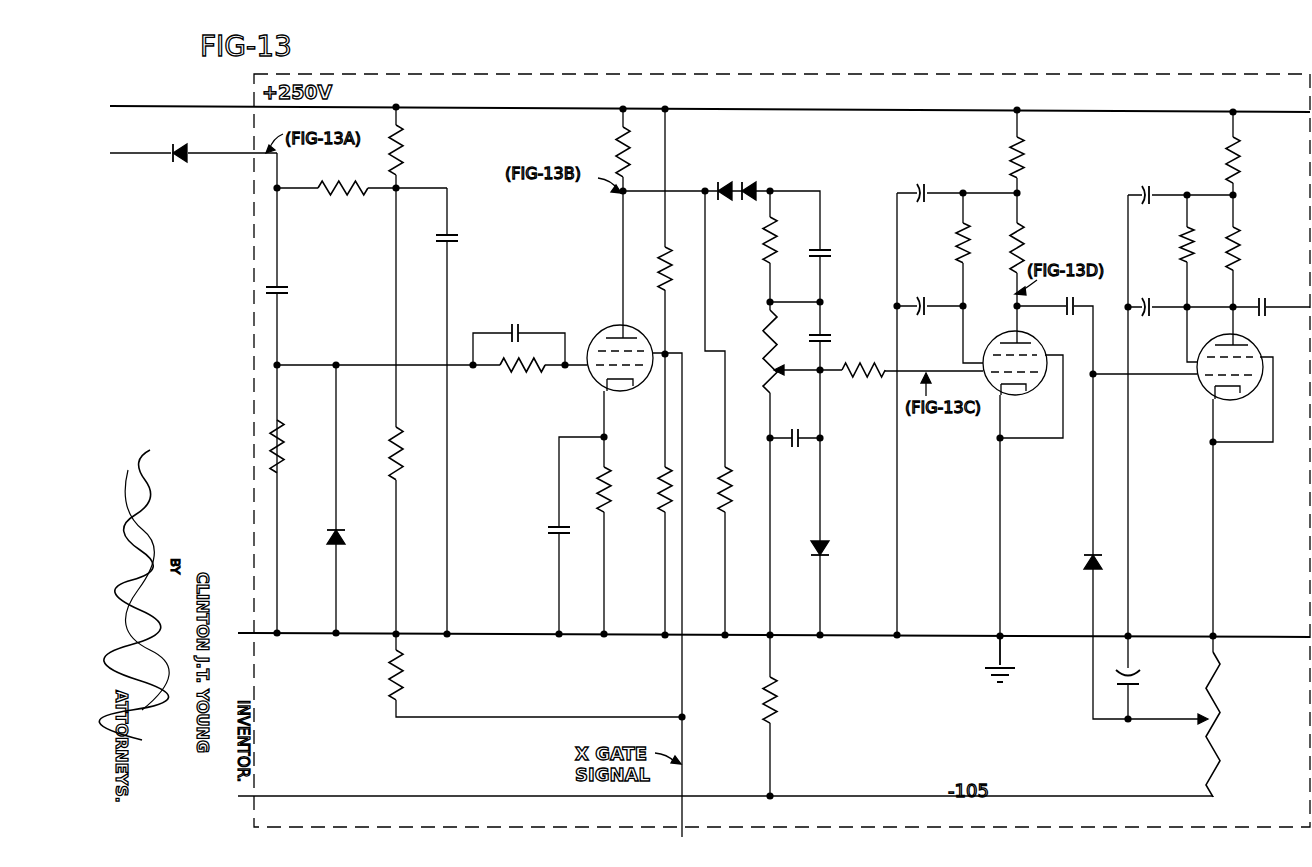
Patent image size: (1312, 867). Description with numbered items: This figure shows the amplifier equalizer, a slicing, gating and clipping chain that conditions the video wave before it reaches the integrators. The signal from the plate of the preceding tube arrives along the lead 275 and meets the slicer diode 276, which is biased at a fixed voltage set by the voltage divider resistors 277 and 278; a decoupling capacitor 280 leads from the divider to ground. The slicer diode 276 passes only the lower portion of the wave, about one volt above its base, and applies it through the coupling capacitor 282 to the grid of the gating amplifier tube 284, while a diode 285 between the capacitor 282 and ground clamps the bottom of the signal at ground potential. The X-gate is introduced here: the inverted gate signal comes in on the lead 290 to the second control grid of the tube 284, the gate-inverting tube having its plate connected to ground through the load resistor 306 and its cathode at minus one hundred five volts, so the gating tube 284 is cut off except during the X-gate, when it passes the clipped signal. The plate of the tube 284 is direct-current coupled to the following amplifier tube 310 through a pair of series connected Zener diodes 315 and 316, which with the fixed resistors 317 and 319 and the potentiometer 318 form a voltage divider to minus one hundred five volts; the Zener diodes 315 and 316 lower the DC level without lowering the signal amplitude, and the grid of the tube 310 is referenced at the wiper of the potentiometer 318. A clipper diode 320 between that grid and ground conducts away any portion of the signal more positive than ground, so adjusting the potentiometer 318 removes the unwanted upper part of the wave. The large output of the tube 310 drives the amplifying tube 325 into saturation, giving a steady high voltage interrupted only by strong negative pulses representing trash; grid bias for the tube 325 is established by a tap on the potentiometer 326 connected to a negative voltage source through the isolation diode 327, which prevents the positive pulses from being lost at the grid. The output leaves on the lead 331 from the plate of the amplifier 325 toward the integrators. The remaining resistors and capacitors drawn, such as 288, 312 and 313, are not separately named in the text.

The lead 275 is at (150, 153).
The slicer diode 276 is at (193, 168).
The voltage divider resistor 277 is at (403, 148).
The voltage divider resistor 278 is at (388, 426).
The decoupling capacitor 280 is at (462, 240).
The coupling capacitor 282 is at (291, 295).
The gating amplifier tube 284 is at (594, 376).
The diode 285 is at (322, 544).
The capacitor 288 is at (511, 330).
The lead 290 is at (675, 688).
The load resistor 306 is at (388, 685).
The amplifier tube 310 is at (1012, 393).
The resistor 312 is at (614, 141).
The resistor 313 is at (743, 508).
The Zener diode 315 is at (722, 183).
The Zener diode 316 is at (744, 183).
The fixed resistor 317 is at (766, 242).
The potentiometer 318 is at (764, 362).
The fixed resistor 319 is at (780, 698).
The clipper diode 320 is at (828, 547).
The amplifying tube 325 is at (1201, 386).
The potentiometer 326 is at (1244, 720).
The isolation diode 327 is at (1080, 560).
The lead 331 is at (1276, 298).